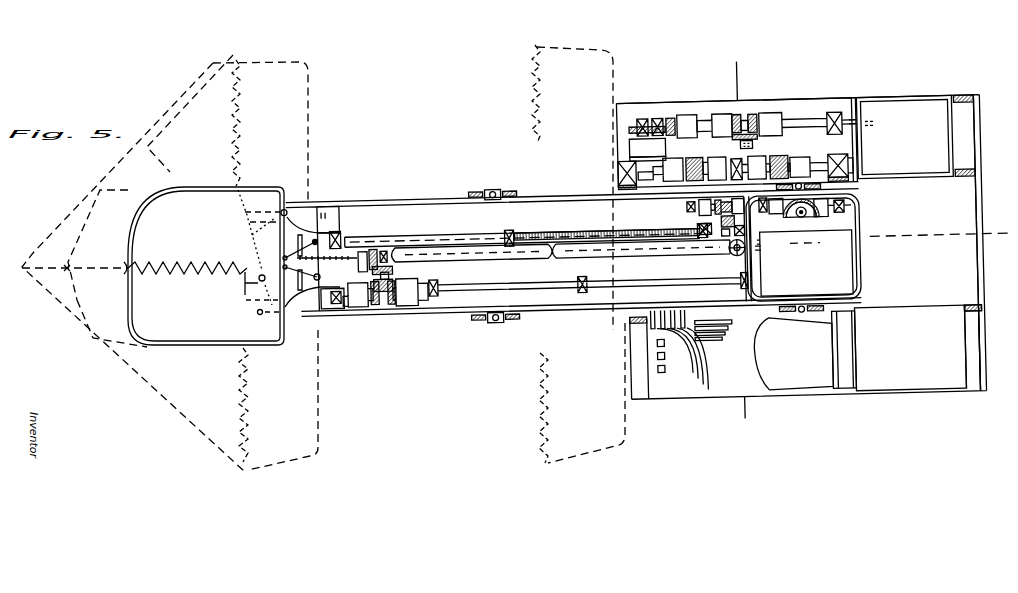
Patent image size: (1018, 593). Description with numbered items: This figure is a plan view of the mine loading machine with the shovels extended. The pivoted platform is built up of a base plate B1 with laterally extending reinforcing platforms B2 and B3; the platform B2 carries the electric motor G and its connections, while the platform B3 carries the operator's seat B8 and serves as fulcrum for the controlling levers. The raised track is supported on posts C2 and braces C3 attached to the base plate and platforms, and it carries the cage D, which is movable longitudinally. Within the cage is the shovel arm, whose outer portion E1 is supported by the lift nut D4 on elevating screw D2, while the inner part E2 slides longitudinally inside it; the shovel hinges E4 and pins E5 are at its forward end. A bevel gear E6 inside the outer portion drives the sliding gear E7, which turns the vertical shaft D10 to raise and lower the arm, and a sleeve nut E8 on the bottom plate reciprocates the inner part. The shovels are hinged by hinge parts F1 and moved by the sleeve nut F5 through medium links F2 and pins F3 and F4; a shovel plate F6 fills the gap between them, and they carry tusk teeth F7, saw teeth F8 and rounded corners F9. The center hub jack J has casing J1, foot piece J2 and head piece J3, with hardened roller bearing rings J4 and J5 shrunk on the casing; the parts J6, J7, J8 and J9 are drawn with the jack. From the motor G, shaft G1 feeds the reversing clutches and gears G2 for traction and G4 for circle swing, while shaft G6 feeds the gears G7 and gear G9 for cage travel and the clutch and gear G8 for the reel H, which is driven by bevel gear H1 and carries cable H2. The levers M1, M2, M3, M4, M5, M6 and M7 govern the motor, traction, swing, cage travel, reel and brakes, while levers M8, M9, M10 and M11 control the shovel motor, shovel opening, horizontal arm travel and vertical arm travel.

The hinge parts F1 is at (284, 200).
The medium links F2 is at (246, 299).
The pins F3 is at (245, 283).
The pins F4 is at (256, 312).
The sleeve nut F5 is at (228, 257).
The shovel plate F6 is at (212, 244).
The tusk teeth F7 is at (323, 259).
The saw teeth F8 is at (540, 381).
The corners F9 is at (120, 329).
The outer portion of shovel arm E1 is at (860, 268).
The inner part of shovel arm E2 is at (381, 306).
The shovel hinges E4 is at (326, 205).
The pins E5 is at (288, 203).
The bevel gear E6 is at (826, 191).
The sliding gear E7 is at (790, 222).
The sleeve nut E8 is at (477, 231).
The cage D is at (470, 190).
The elevating screw D2 is at (492, 188).
The lift nut D4 is at (500, 186).
The vertical shaft D10 is at (807, 221).
The vertical center hub jack J is at (728, 251).
The jack casing J1 is at (534, 281).
The foot piece J2 is at (401, 281).
The head piece J3 is at (389, 262).
The roller bearing ring J4 is at (372, 244).
The roller bearing ring J5 is at (846, 210).
The coupling sleeve J6 is at (831, 214).
The shaft bearing J7 is at (689, 206).
The bevel pinion J8 is at (700, 228).
The rack J9 is at (620, 231).
The electric motor G is at (900, 136).
The shaft G1 is at (815, 168).
The reversing clutches and gears G2 is at (780, 162).
The reversing clutches and gears G4 is at (697, 162).
The shaft G6 is at (795, 125).
The reversing clutches and gears G7 is at (742, 121).
The clutch and gear G8 is at (679, 121).
The gear G9 is at (759, 141).
The reel H is at (647, 147).
The bevel gear H1 is at (636, 133).
The cable H2 is at (636, 157).
The base plate B1 is at (950, 243).
The reinforcing platform B2 is at (791, 108).
The reinforcing platform B3 is at (910, 348).
The operator's seat B8 is at (805, 350).
The posts C2 is at (980, 320).
The braces C3 is at (978, 343).
The lever M1 is at (655, 346).
The lever M2 is at (725, 321).
The lever M3 is at (725, 330).
The lever M4 is at (725, 338).
The lever M5 is at (715, 344).
The lever M6 is at (655, 358).
The lever M7 is at (655, 371).
The lever M8 is at (672, 342).
The lever M9 is at (679, 345).
The lever M10 is at (686, 348).
The lever M11 is at (694, 349).